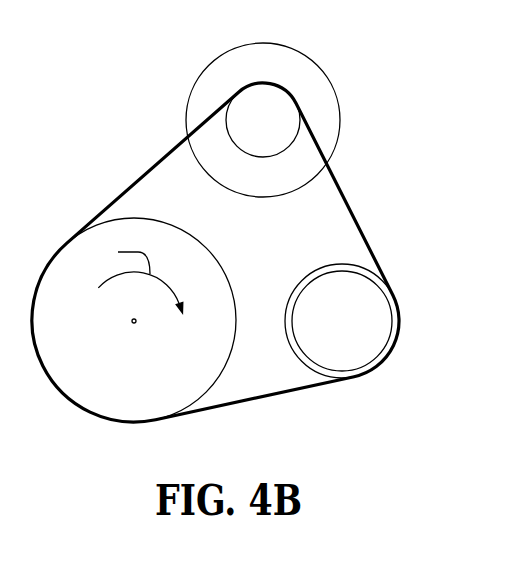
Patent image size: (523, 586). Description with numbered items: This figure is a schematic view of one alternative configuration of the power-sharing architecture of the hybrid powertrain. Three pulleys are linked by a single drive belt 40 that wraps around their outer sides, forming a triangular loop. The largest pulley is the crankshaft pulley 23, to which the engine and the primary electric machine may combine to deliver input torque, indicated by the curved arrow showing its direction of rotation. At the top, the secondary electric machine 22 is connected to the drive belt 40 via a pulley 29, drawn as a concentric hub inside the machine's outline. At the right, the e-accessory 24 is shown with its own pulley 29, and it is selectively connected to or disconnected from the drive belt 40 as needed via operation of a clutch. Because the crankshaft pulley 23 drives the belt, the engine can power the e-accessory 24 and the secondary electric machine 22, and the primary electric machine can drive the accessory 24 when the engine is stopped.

The secondary electric machine 22 is at (259, 43).
The crankshaft pulley 23 is at (197, 237).
The e-accessory 24 is at (390, 293).
The pulley 29 is at (276, 133).
The drive belt 40 is at (348, 210).